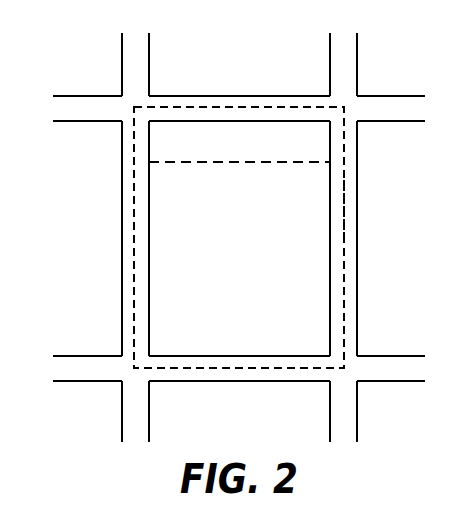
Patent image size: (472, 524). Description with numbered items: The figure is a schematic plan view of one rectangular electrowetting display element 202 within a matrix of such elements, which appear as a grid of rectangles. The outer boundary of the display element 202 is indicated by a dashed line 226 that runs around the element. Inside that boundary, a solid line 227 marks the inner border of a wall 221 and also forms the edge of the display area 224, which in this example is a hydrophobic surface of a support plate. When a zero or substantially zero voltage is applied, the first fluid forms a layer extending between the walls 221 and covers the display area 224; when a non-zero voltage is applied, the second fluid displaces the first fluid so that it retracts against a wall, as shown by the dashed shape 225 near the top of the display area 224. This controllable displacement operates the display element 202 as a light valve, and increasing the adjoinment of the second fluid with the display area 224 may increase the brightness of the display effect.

The display element 202 is at (241, 72).
The wall 221 is at (131, 287).
The display area 224 is at (253, 206).
The dashed shape 225 is at (180, 163).
The dashed line 226 is at (346, 208).
The solid line 227 is at (331, 253).